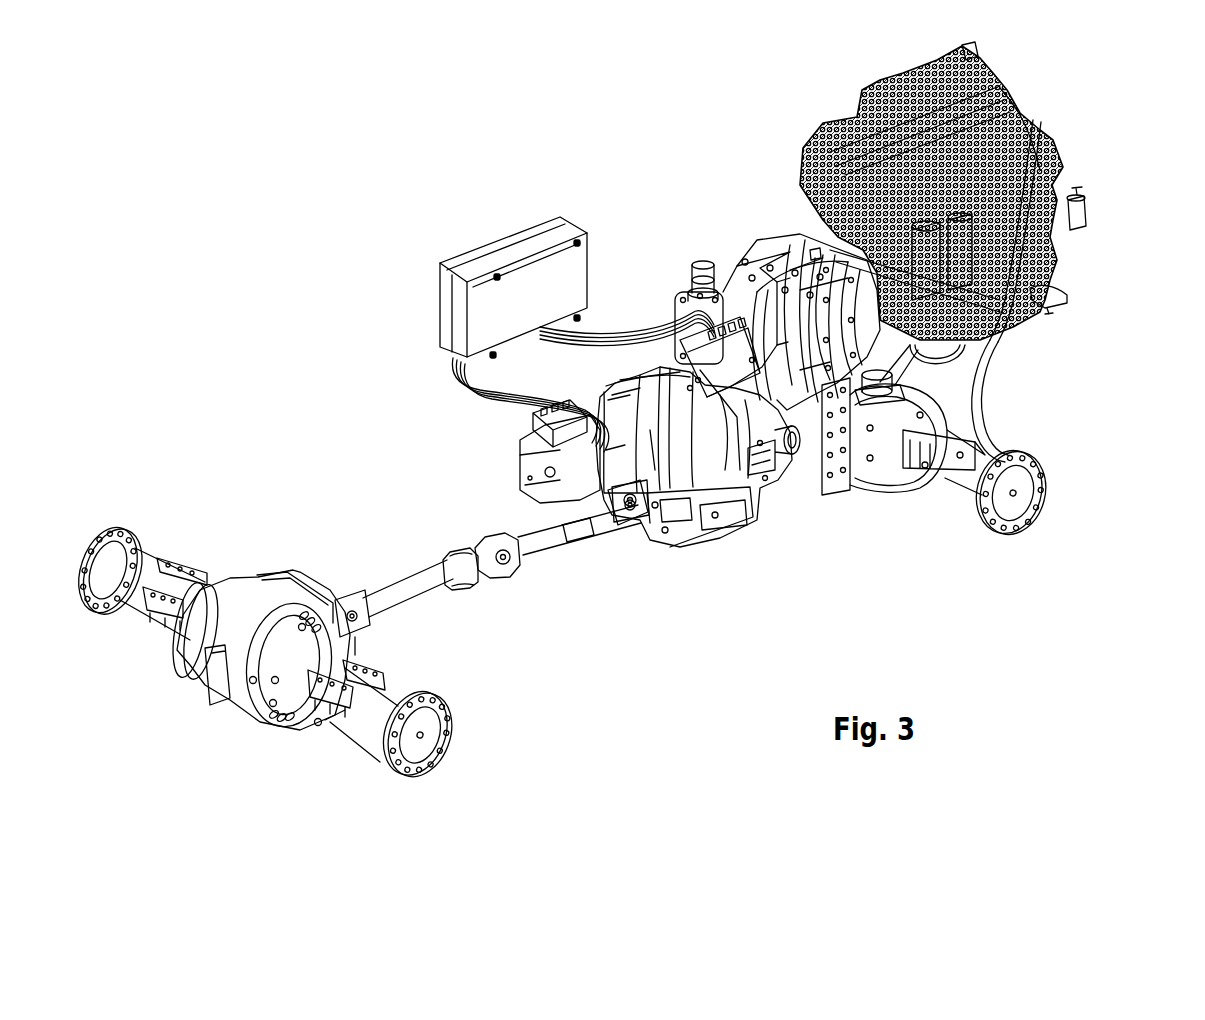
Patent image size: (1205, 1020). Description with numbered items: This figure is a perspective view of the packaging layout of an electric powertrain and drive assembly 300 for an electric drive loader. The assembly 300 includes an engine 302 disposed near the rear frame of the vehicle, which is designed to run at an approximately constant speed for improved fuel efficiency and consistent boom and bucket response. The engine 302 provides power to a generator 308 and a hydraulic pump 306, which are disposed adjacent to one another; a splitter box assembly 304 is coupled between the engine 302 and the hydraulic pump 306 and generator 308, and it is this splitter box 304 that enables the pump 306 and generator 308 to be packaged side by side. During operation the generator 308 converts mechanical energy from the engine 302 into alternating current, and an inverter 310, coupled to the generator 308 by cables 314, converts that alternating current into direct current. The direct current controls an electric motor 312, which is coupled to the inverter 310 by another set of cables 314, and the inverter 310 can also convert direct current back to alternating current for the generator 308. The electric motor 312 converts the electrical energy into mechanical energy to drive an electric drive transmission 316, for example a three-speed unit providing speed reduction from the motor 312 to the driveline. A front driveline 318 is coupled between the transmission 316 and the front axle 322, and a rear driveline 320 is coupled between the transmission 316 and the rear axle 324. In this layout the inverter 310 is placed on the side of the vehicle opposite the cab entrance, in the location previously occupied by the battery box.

The electric powertrain and drive assembly 300 is at (336, 156).
The engine 302 is at (1052, 124).
The splitter box assembly 304 is at (798, 258).
The hydraulic pump 306 is at (725, 278).
The generator 308 is at (846, 462).
The inverter 310 is at (515, 240).
The electric motor 312 is at (530, 470).
The cables 314 is at (612, 327).
The electric drive transmission 316 is at (703, 530).
The front driveline 318 is at (487, 583).
The rear driveline 320 is at (760, 477).
The front axle 322 is at (438, 760).
The rear axle 324 is at (985, 535).